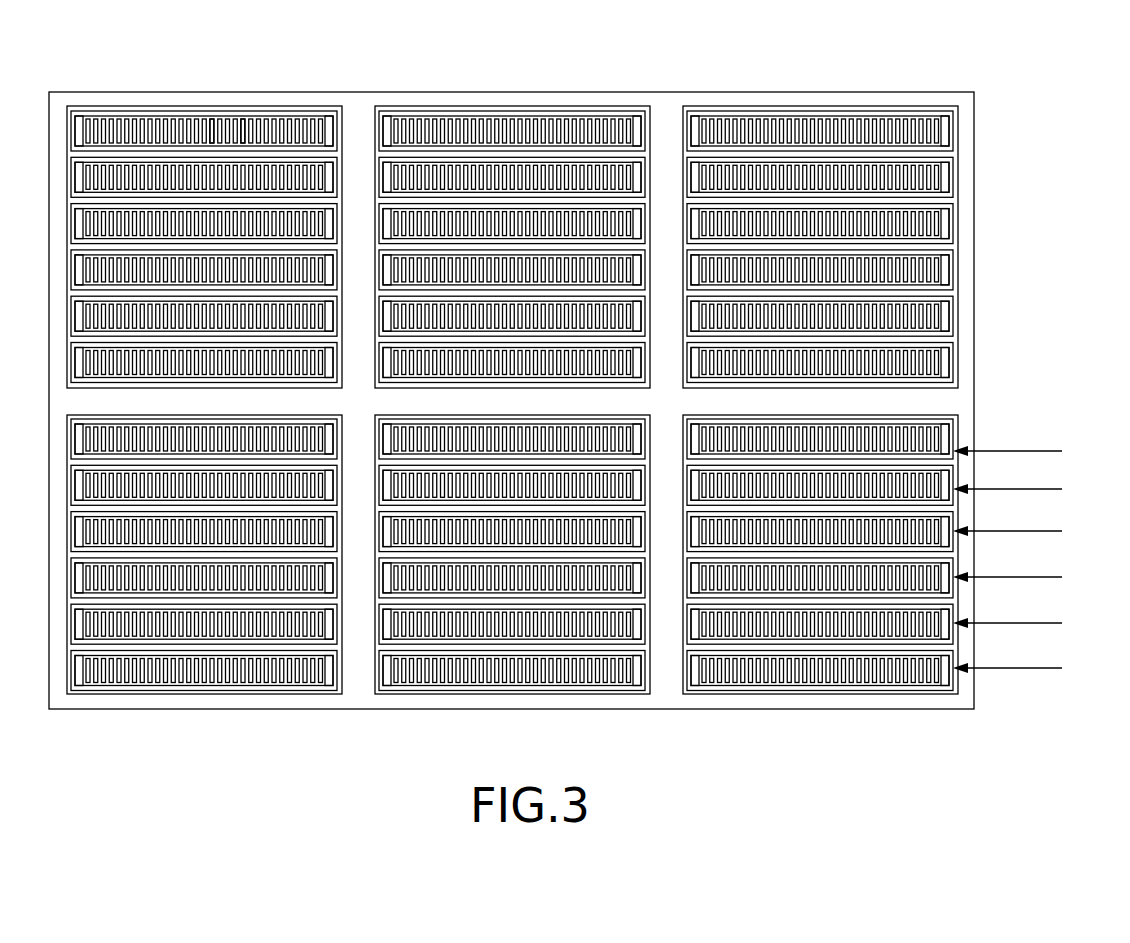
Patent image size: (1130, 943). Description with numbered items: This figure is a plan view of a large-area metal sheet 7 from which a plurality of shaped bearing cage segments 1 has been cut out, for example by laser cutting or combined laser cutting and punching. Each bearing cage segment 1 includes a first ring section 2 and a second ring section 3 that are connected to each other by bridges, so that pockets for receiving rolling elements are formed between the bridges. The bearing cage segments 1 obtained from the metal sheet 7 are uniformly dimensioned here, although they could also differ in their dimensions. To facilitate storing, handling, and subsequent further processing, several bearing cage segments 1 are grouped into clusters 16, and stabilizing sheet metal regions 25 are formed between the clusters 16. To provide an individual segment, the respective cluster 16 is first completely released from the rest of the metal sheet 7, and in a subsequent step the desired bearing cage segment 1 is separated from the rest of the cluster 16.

The bearing cage segment 1 is at (116, 125).
The first ring section 2 is at (212, 113).
The second ring section 3 is at (244, 147).
The metal sheet 7 is at (942, 100).
The cluster 16 is at (600, 216).
The stabilizing sheet metal region 25 is at (360, 145).